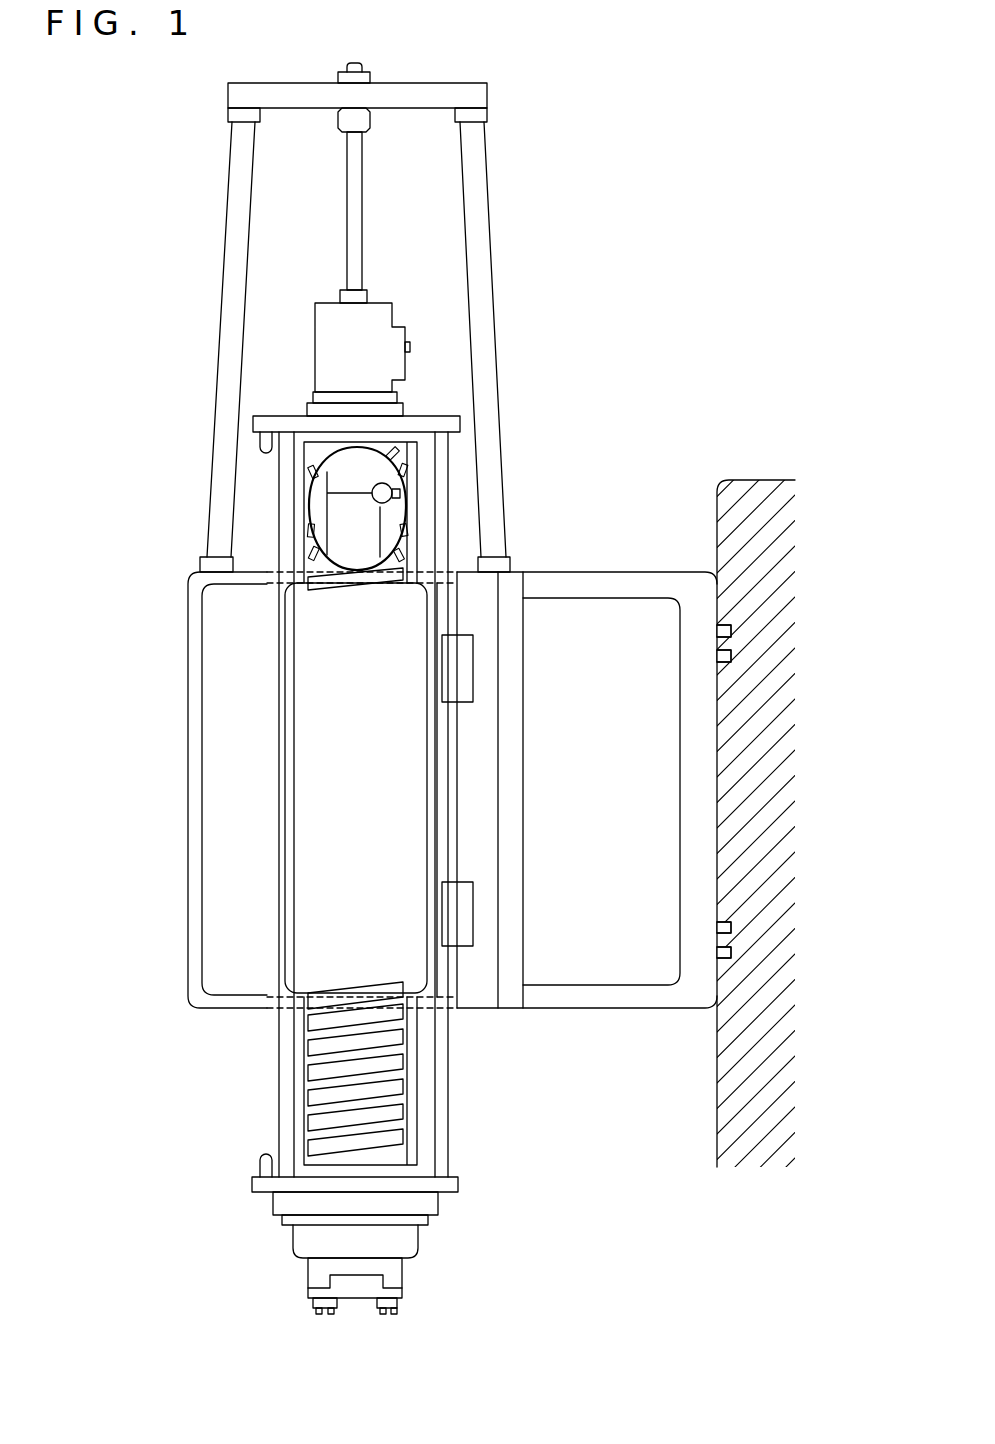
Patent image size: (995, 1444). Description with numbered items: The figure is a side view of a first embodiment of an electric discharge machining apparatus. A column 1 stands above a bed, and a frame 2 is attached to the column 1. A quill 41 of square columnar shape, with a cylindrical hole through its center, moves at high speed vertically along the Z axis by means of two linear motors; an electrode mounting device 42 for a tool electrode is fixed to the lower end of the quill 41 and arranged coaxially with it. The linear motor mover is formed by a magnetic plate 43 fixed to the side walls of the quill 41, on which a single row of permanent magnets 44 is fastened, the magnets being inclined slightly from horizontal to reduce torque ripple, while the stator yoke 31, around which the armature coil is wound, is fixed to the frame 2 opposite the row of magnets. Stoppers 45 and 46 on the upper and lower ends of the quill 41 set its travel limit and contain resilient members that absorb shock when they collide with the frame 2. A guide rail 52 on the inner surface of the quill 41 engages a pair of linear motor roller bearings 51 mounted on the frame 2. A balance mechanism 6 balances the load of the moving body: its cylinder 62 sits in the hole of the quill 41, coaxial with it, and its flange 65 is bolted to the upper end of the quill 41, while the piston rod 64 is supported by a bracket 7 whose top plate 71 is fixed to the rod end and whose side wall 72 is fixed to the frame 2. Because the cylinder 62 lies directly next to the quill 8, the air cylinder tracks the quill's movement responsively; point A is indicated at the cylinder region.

The column 1 is at (743, 481).
The frame 2 is at (188, 708).
The balance mechanism 6 is at (440, 419).
The bracket 7 is at (380, 317).
The quill 8 is at (383, 308).
The yoke 31 is at (287, 883).
The quill 41 is at (279, 1050).
The electrode mounting device 42 is at (408, 1288).
The magnetic plate 43 is at (402, 1155).
The permanent magnets 44 is at (400, 1125).
The stopper 45 is at (262, 442).
The stopper 46 is at (262, 1167).
The linear motor roller bearings 51 is at (467, 683).
The guide rail 52 is at (443, 1036).
The cylinder 62 is at (375, 545).
The piston rod 64 is at (358, 225).
The flange 65 is at (313, 411).
The top plate 71 is at (480, 104).
The side wall 72 is at (230, 203).
The contact point A is at (408, 500).